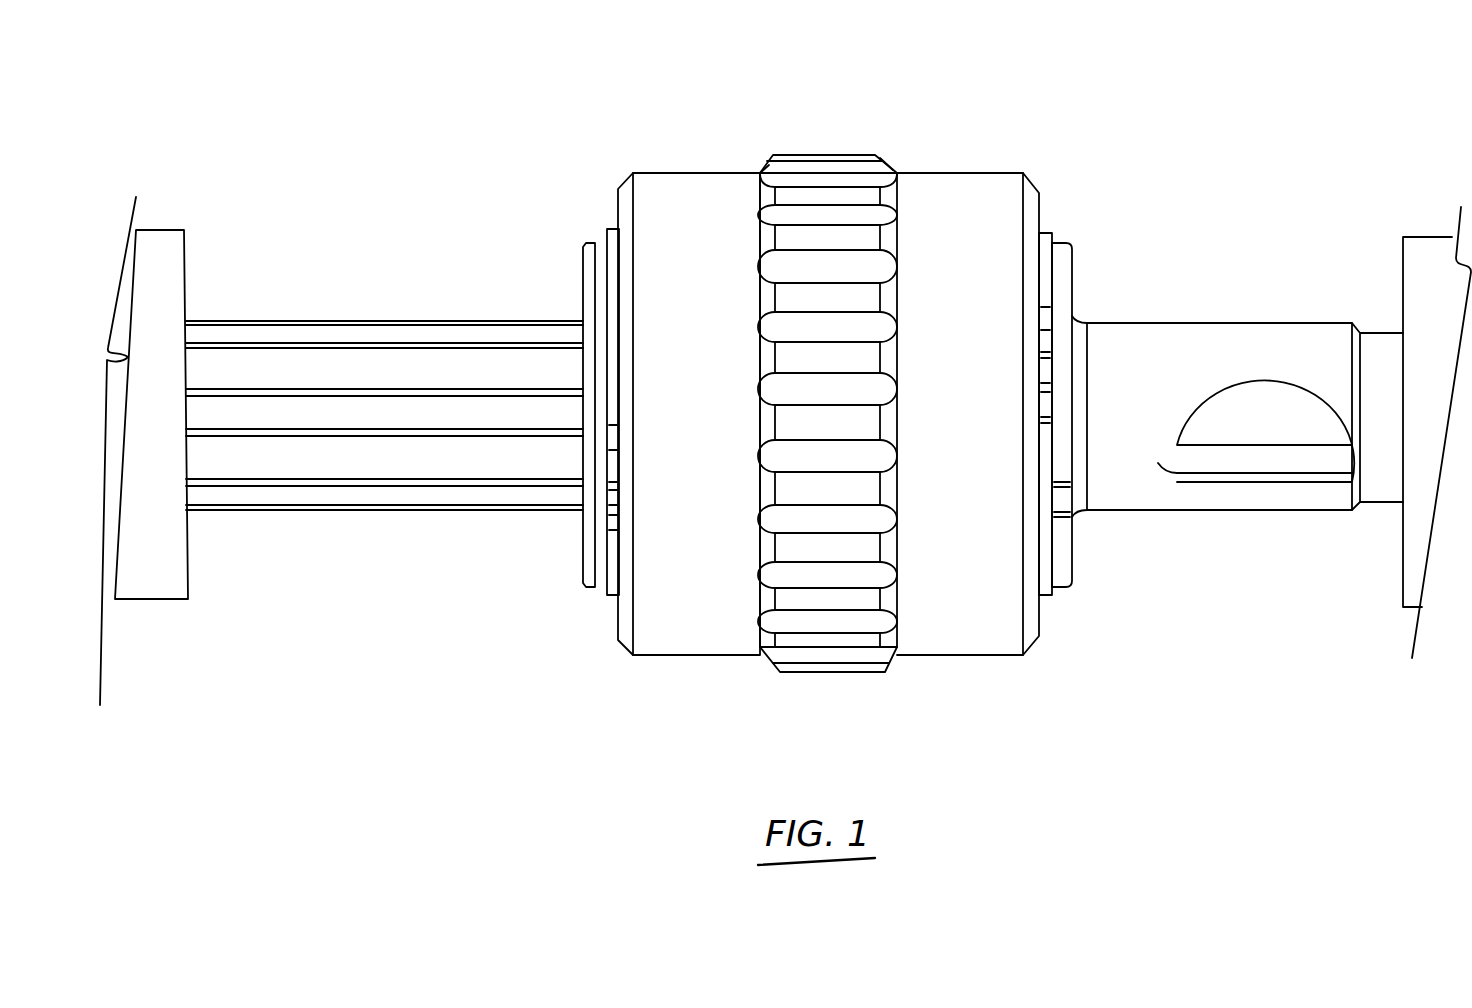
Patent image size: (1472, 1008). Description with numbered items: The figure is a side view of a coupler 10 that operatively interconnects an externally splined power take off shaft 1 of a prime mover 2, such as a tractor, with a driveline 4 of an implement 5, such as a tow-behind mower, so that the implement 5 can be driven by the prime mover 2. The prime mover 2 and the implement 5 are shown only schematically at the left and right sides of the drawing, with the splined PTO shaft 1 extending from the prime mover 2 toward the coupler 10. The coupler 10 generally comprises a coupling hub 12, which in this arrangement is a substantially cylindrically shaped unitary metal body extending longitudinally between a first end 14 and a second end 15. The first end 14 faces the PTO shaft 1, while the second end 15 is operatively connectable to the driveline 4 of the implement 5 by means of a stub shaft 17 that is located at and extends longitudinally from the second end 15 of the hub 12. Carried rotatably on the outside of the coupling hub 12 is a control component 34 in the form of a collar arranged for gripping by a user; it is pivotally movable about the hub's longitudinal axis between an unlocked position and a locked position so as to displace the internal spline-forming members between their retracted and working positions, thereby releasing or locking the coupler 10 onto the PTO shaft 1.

The PTO shaft 1 is at (409, 321).
The prime mover 2 is at (186, 248).
The driveline 4 is at (1378, 328).
The implement 5 is at (1402, 255).
The coupler 10 is at (938, 170).
The coupling hub 12 is at (702, 172).
The first end 14 is at (616, 191).
The second end 15 is at (1041, 193).
The stub shaft 17 is at (1138, 322).
The control component 34 is at (810, 154).